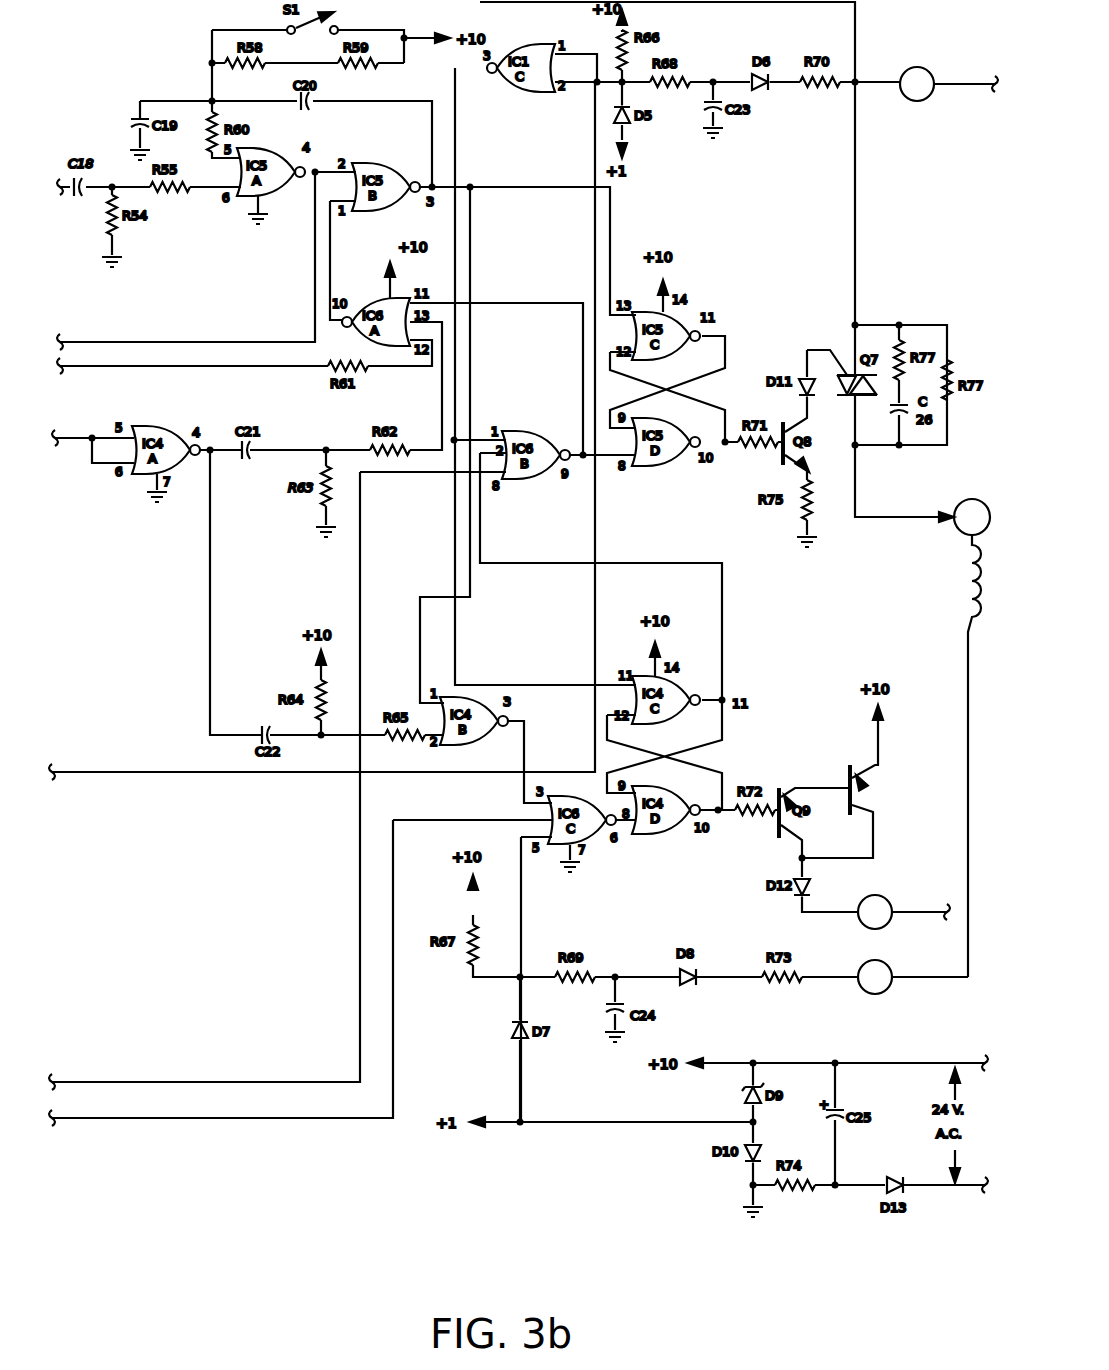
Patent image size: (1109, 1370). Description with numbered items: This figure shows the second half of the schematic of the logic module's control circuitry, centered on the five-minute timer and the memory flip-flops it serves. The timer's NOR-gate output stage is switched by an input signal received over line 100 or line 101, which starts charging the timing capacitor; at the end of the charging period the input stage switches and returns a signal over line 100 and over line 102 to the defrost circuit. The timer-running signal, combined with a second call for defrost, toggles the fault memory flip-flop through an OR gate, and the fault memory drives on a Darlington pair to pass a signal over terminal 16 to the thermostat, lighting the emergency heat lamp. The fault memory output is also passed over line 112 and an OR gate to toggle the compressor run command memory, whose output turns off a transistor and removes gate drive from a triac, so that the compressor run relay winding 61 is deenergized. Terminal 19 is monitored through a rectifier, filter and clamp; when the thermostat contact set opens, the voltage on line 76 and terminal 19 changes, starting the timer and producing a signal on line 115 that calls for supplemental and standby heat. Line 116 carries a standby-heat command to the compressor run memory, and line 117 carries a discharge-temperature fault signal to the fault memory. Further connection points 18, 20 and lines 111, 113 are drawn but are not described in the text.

The terminal 16 is at (875, 912).
The terminal 18 is at (875, 977).
The terminal 19 is at (917, 84).
The terminal 20 is at (972, 517).
The compressor run relay winding 61 is at (960, 588).
The line 76 is at (958, 84).
The line 100 is at (320, 160).
The line 101 is at (333, 222).
The line 102 is at (155, 342).
The line to IC4B input 111 is at (470, 585).
The line 112 is at (722, 618).
The line from IC1C to IC4C 113 is at (455, 138).
The line 115 is at (595, 532).
The line 116 is at (360, 548).
The line 117 is at (478, 820).